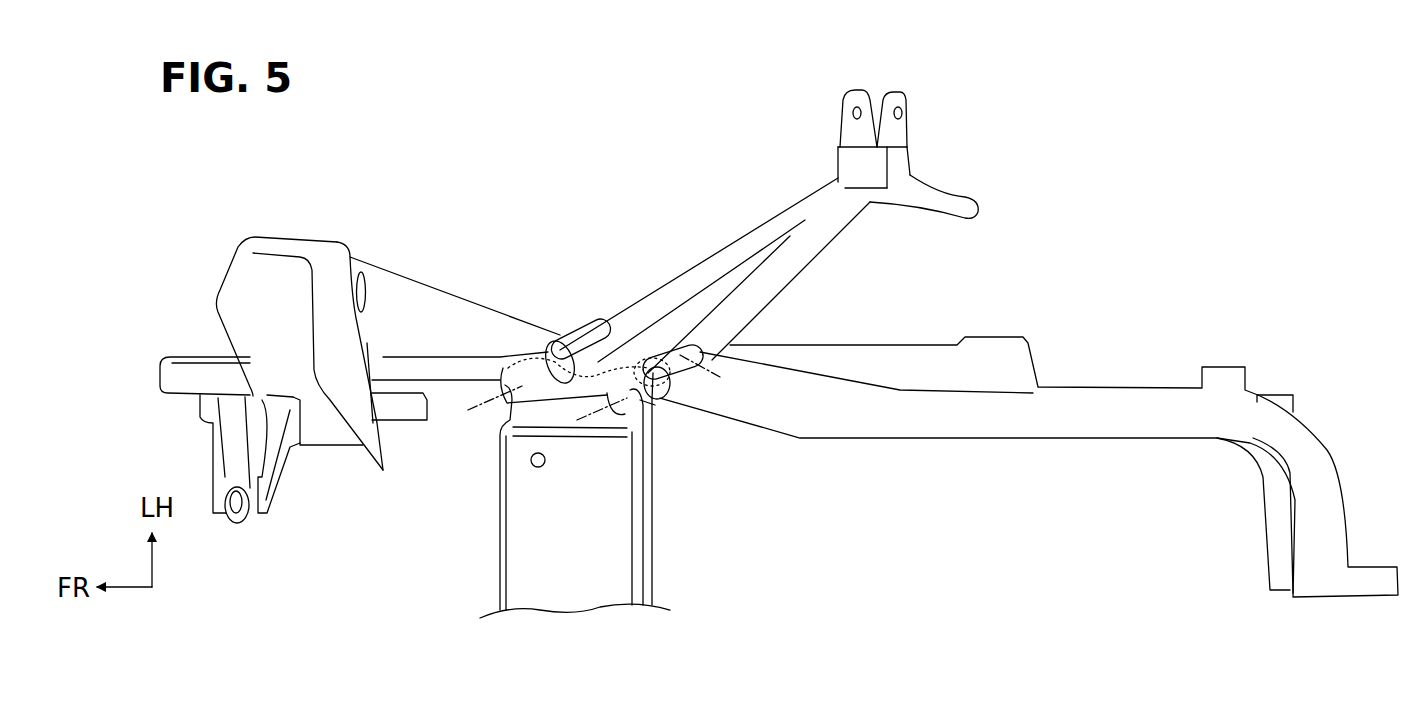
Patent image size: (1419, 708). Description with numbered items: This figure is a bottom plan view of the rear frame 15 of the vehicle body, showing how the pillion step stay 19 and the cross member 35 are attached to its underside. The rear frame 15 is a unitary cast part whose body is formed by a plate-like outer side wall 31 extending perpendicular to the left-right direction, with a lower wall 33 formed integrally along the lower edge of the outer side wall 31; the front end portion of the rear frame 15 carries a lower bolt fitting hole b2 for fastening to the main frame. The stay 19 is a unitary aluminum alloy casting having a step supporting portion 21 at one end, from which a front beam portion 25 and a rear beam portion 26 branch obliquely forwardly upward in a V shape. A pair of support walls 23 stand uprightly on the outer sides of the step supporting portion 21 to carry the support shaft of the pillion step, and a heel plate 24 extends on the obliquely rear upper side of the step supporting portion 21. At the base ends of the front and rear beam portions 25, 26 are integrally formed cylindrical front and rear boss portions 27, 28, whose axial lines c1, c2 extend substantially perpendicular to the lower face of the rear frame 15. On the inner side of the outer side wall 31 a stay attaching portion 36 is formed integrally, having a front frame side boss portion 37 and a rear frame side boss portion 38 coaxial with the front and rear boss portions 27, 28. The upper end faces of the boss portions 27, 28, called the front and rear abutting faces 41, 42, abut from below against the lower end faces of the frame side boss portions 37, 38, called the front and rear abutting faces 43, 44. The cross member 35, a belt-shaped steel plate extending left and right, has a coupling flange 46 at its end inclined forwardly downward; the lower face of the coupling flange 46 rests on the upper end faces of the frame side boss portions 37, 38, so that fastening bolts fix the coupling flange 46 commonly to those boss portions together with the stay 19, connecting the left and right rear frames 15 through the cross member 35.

The rear frame 15 is at (1029, 416).
The stay 19 is at (715, 248).
The step supporting portion 21 is at (947, 118).
The support walls 23 is at (862, 92).
The heel plate 24 is at (977, 200).
The front beam portion 25 is at (682, 277).
The rear beam portion 26 is at (770, 286).
The front boss portion 27 is at (583, 340).
The rear boss portion 28 is at (690, 372).
The outer side wall 31 is at (1083, 388).
The lower wall 33 is at (1058, 437).
The cross member 35 is at (492, 582).
The stay attaching portion 36 is at (556, 486).
The front frame side boss portion 37 is at (500, 410).
The rear frame side boss portion 38 is at (650, 417).
The front abutting face 41 is at (540, 358).
The rear abutting face 42 is at (655, 405).
The front abutting face 43 is at (553, 347).
The rear abutting face 44 is at (662, 393).
The coupling flange 46 is at (557, 410).
The lower bolt fitting hole b2 is at (370, 282).
The axial line c1 is at (607, 330).
The axial line c2 is at (720, 377).